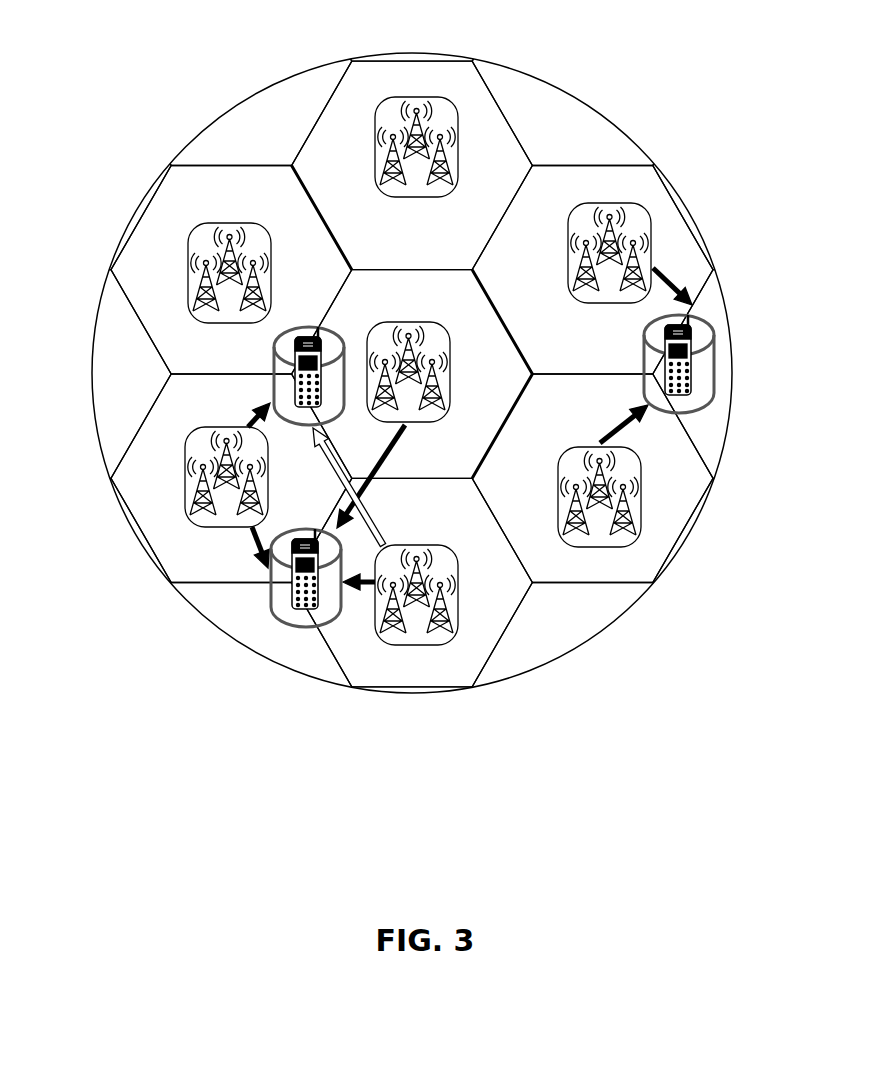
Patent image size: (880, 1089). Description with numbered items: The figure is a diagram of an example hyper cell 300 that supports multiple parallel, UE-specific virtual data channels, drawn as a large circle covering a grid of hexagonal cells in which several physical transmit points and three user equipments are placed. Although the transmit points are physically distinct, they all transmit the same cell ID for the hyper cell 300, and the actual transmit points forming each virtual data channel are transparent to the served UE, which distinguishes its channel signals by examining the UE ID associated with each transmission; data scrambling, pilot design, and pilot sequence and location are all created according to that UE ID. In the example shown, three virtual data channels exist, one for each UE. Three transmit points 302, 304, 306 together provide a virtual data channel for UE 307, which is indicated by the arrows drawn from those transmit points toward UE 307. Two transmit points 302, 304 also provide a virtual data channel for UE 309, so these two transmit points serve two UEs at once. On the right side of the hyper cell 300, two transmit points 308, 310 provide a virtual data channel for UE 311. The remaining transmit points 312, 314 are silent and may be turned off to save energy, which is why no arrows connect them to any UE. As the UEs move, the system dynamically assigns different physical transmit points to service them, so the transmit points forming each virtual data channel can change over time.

The hyper cell 300 is at (635, 755).
The transmit point 302 is at (410, 635).
The transmit point 304 is at (187, 452).
The transmit point 306 is at (428, 325).
The UE 307 is at (292, 628).
The transmit point 308 is at (613, 545).
The UE 309 is at (273, 358).
The transmit point 310 is at (652, 290).
The UE 311 is at (695, 355).
The transmit point 312 is at (200, 233).
The transmit point 314 is at (390, 123).